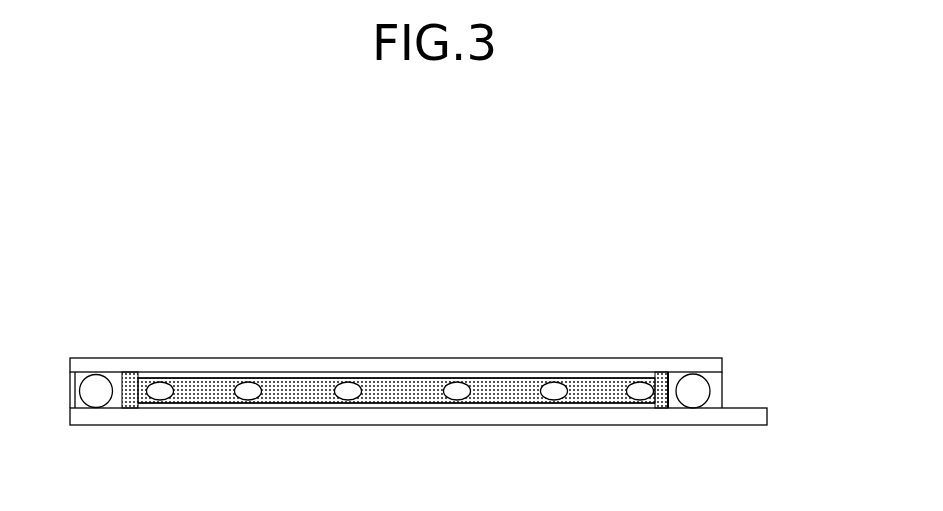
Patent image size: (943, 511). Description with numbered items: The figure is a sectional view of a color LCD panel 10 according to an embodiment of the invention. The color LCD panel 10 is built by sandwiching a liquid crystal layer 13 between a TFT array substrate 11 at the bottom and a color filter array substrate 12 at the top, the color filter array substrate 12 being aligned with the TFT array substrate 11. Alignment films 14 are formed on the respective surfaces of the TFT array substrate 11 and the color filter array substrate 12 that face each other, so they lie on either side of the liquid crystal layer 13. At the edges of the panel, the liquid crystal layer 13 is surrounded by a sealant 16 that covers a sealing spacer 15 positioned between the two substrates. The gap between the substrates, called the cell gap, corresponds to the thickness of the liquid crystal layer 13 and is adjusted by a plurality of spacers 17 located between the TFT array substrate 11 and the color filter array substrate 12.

The color LCD panel 10 is at (512, 201).
The TFT array substrate 11 is at (592, 417).
The color filter array substrate 12 is at (545, 366).
The liquid crystal layer 13 is at (298, 392).
The alignment films 14 is at (410, 378).
The sealing spacer 15 is at (103, 383).
The sealant 16 is at (81, 372).
The spacers 17 is at (172, 385).